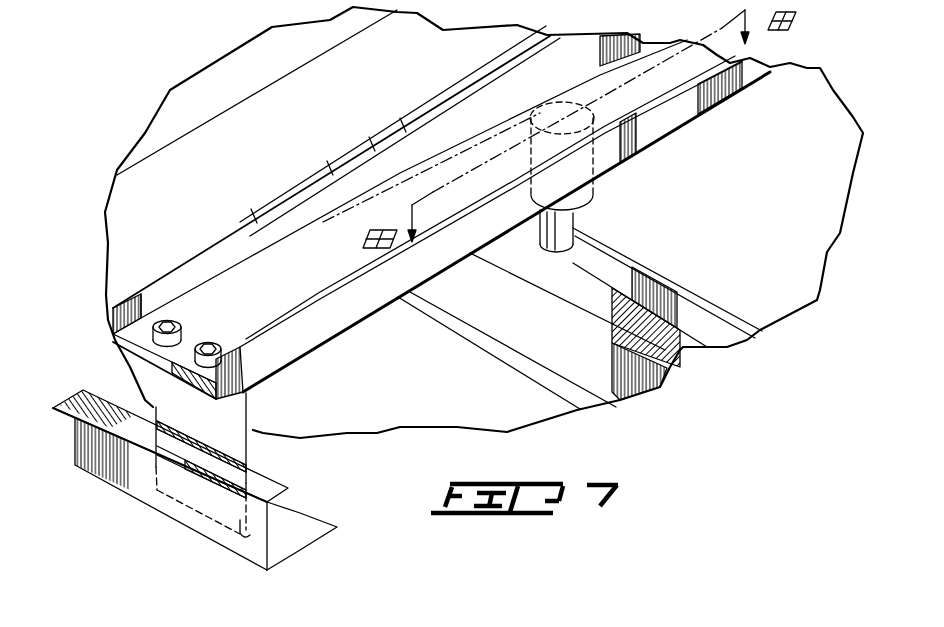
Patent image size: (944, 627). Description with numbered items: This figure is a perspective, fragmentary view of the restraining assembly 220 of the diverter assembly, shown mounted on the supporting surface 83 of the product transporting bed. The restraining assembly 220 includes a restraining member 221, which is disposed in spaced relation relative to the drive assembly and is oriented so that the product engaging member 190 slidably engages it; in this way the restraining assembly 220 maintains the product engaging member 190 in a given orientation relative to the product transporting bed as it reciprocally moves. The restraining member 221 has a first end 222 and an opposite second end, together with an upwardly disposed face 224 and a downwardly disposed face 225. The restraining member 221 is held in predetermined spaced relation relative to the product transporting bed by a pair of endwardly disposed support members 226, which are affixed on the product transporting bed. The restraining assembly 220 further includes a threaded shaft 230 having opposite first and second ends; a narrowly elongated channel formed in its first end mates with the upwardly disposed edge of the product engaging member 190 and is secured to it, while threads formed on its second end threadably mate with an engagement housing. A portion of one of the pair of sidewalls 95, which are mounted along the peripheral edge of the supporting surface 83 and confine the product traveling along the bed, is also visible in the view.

The supporting surface 83 is at (800, 239).
The sidewalls 95 is at (268, 553).
The product engaging member 190 is at (506, 331).
The restraining assembly 220 is at (628, 193).
The restraining member 221 is at (447, 252).
The first end 222 is at (210, 320).
The upwardly disposed face 224 is at (312, 291).
The downwardly disposed face 225 is at (320, 347).
The endwardly disposed support members 226 is at (190, 420).
The threaded shaft 230 is at (566, 252).